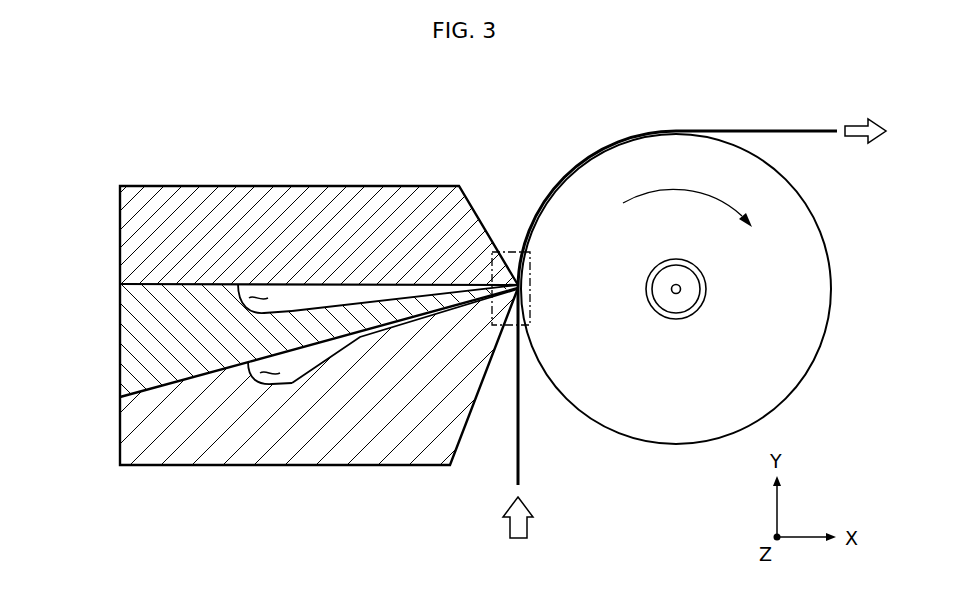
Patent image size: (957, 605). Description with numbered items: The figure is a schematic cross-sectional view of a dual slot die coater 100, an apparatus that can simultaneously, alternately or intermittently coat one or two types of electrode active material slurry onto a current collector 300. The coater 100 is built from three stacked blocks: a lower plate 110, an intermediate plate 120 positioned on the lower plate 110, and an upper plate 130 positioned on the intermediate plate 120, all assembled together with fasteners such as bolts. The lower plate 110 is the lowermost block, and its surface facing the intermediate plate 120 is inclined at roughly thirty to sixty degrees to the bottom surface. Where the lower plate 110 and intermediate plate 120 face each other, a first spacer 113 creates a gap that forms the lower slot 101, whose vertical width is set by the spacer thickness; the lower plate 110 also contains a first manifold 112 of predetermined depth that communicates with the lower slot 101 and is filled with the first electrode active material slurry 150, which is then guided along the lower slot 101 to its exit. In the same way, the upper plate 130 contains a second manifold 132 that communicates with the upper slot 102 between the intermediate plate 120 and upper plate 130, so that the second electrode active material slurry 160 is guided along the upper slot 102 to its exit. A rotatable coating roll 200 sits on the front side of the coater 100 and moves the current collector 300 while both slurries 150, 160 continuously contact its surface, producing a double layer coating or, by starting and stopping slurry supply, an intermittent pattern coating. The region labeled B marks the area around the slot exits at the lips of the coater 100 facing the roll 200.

The dual slot die coater 100 is at (350, 295).
The lower slot 101 is at (312, 347).
The upper slot 102 is at (304, 283).
The lower plate 110 is at (104, 433).
The first manifold 112 is at (292, 384).
The first spacer 113 is at (143, 396).
The intermediate plate 120 is at (104, 330).
The upper plate 130 is at (104, 241).
The second manifold 132 is at (287, 311).
The first electrode active material slurry 150 is at (269, 377).
The second electrode active material slurry 160 is at (259, 297).
The coating roll 200 is at (676, 444).
The current collector 300 is at (520, 468).
The detail region B is at (505, 251).